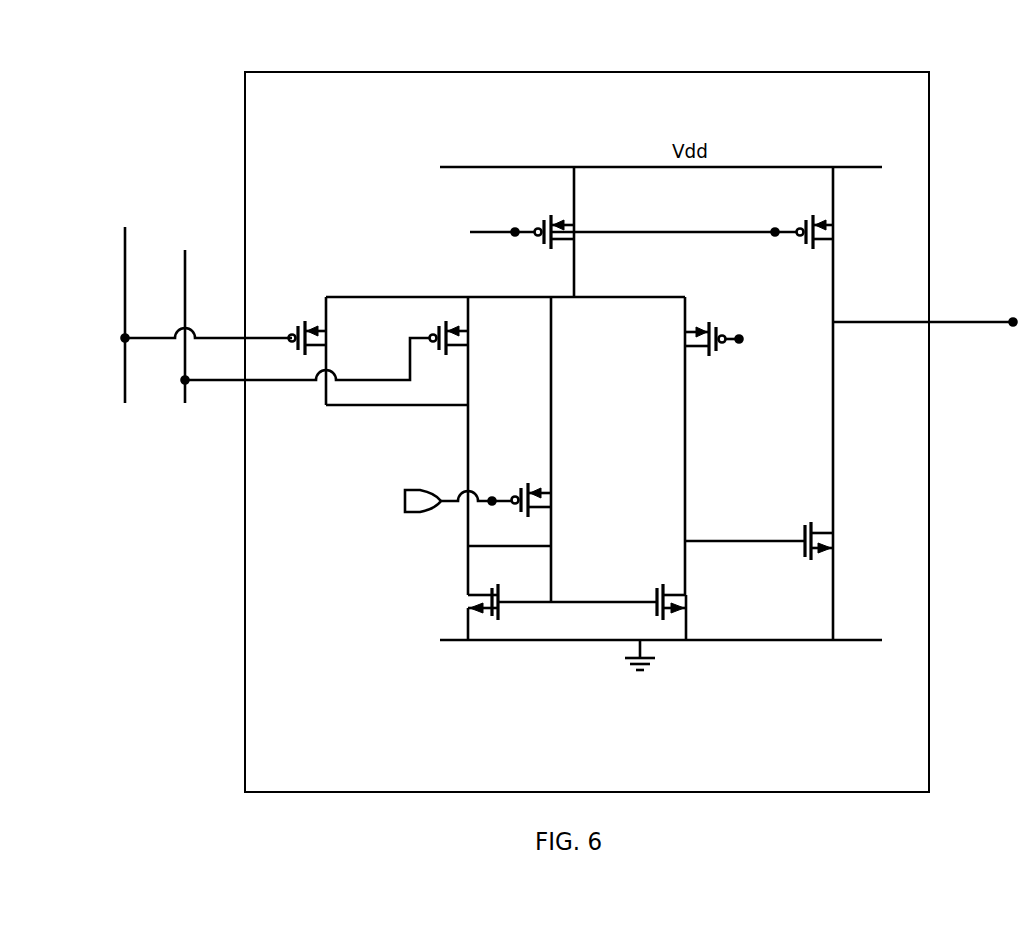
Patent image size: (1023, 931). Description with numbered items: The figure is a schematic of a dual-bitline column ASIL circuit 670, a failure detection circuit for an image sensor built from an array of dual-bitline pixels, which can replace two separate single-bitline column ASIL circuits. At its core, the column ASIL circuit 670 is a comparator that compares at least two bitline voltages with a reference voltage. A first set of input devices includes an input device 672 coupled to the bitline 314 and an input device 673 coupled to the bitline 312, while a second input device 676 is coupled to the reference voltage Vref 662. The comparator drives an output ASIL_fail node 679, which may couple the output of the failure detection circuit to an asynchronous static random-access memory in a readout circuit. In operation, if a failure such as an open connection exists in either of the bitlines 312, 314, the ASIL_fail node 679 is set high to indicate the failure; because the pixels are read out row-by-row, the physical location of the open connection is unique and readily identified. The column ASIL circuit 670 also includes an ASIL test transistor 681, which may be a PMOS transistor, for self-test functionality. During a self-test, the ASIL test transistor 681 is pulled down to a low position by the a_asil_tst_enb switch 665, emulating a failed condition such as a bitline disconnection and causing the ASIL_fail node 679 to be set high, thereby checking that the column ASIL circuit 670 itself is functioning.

The dual-bitline column ASIL circuit 670 is at (416, 132).
The bitline 312 is at (128, 248).
The bitline 314 is at (186, 270).
The input device 673 is at (293, 321).
The input device 672 is at (428, 320).
The second input device 676 is at (728, 318).
The Vref 662 is at (741, 341).
The ASIL test transistor 681 is at (553, 503).
The a_asil_tst_enb switch 665 is at (406, 500).
The ASIL_fail node 679 is at (1013, 325).